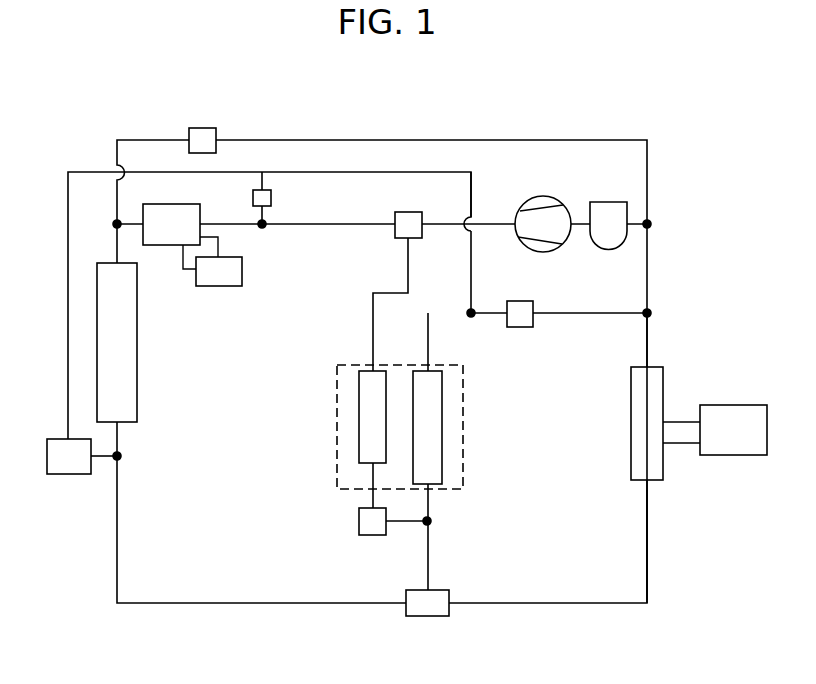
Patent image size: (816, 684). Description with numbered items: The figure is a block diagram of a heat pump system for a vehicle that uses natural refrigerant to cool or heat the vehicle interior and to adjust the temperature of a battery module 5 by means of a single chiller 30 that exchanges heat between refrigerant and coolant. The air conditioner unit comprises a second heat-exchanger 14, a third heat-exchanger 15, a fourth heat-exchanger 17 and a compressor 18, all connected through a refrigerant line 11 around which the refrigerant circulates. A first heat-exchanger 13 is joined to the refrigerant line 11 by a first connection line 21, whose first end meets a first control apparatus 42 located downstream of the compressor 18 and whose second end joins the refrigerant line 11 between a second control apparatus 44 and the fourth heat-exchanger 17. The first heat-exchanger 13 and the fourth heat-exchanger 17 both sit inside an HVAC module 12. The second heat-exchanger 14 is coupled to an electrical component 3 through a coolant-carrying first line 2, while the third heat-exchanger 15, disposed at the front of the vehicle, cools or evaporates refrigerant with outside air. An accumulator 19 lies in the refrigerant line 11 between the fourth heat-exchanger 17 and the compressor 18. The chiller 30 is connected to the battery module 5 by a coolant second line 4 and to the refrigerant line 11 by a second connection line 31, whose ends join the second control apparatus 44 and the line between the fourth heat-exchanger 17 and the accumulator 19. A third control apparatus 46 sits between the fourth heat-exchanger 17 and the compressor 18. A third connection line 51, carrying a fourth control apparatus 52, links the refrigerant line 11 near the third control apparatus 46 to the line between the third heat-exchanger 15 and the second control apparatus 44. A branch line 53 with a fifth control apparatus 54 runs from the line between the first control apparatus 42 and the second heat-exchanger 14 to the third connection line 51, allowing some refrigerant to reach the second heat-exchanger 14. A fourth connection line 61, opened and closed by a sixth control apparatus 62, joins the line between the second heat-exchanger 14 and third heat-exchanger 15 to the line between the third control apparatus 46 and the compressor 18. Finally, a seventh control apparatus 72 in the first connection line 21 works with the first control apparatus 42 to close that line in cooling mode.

The first line 2 is at (215, 246).
The electrical component 3 is at (220, 286).
The second line 4 is at (686, 428).
The battery module 5 is at (733, 405).
The refrigerant line 11 is at (311, 226).
The HVAC module 12 is at (463, 392).
The first heat-exchanger 13 is at (359, 415).
The second heat-exchanger 14 is at (162, 204).
The third heat-exchanger 15 is at (137, 342).
The fourth heat-exchanger 17 is at (442, 430).
The compressor 18 is at (543, 197).
The accumulator 19 is at (608, 202).
The first connection line 21 is at (373, 328).
The chiller 30 is at (658, 363).
The second connection line 31 is at (647, 550).
The first control apparatus 42 is at (395, 234).
The second control apparatus 44 is at (428, 616).
The third control apparatus 46 is at (533, 320).
The third connection line 51 is at (452, 172).
The fourth control apparatus 52 is at (68, 474).
The branch line 53 is at (262, 172).
The fifth control apparatus 54 is at (271, 197).
The fourth connection line 61 is at (388, 140).
The sixth control apparatus 62 is at (202, 128).
The seventh control apparatus 72 is at (359, 520).